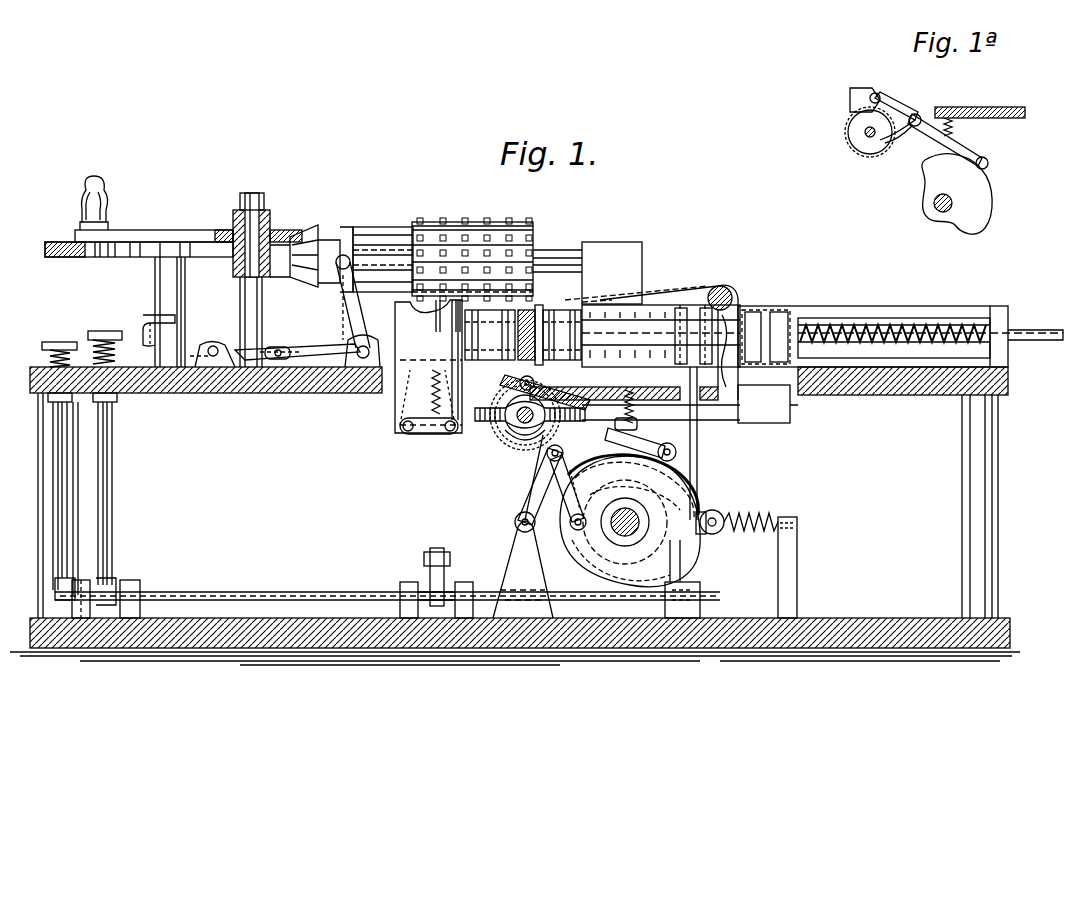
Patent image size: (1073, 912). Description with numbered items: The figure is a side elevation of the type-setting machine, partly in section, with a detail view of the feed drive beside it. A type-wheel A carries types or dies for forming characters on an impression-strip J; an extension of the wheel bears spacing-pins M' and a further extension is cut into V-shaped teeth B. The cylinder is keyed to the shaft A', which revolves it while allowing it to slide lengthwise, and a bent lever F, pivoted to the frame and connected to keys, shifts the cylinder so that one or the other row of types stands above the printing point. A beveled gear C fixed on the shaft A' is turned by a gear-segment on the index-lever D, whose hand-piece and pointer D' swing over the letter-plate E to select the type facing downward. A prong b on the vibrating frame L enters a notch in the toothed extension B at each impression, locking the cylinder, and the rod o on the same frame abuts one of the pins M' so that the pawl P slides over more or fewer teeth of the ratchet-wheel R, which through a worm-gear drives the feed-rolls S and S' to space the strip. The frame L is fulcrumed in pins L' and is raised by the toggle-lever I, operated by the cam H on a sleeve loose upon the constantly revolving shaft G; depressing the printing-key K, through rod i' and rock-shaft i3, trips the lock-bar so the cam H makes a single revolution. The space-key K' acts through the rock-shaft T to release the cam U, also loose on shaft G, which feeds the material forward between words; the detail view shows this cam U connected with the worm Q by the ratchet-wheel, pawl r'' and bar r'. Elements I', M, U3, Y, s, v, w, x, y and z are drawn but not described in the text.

In FIG. 1, the type-wheel A is at (472, 247).
In FIG. 1, the shaft A' is at (587, 258).
In FIG. 1, the cylinder extension with V-shaped teeth B is at (362, 222).
In FIG. 1, the beveled gear C is at (296, 236).
In FIG. 1, the index-lever D is at (188, 223).
In FIG. 1, the hand-piece and pointer D' is at (105, 201).
In FIG. 1, the letter-plate E is at (62, 248).
In FIG. 1, the bent lever F is at (275, 355).
In FIG. 1, the shaft G is at (612, 530).
In FIG. 1A, the shaft G is at (935, 205).
In FIG. 1, the cam H is at (630, 516).
In FIG. 1, the toggle-lever I is at (537, 480).
In FIG. 1, the link I' is at (568, 492).
In FIG. 1, the impression-strip J is at (530, 308).
In FIG. 1, the printing-key K is at (105, 446).
In FIG. 1, the space-key K' is at (59, 459).
In FIG. 1, the vibrating frame L is at (651, 283).
In FIG. 1, the pins L' is at (737, 327).
In FIG. 1, the bar M is at (485, 246).
In FIG. 1, the spacing-pins M' is at (472, 210).
In FIG. 1, the pawl P is at (523, 425).
In FIG. 1, the worm Q is at (520, 420).
In FIG. 1, the ratchet-wheel R is at (521, 430).
In FIG. 1A, the ratchet-wheel R is at (870, 122).
In FIG. 1, the feed-rolls S is at (504, 335).
In FIG. 1, the feed-roller S' is at (562, 335).
In FIG. 1, the rock-shaft T is at (225, 598).
In FIG. 1, the cam U is at (700, 502).
In FIG. 1A, the cam U is at (957, 194).
In FIG. 1, the triangular link U3 is at (482, 592).
In FIG. 1, the flange Y is at (750, 310).
In FIG. 1, the prong b is at (398, 306).
In FIG. 1, the projection i' is at (694, 579).
In FIG. 1, the rock-shaft i3 is at (120, 582).
In FIG. 1, the rod o is at (444, 312).
In FIG. 1, the bar r' is at (640, 425).
In FIG. 1A, the bar r' is at (966, 138).
In FIG. 1A, the pawl r'' is at (899, 121).
In FIG. 1, the screw s is at (925, 320).
In FIG. 1, the spring v is at (751, 513).
In FIG. 1, the rod w is at (700, 458).
In FIG. 1, the cylinder x is at (661, 336).
In FIG. 1, the post y is at (783, 515).
In FIG. 1, the housing z is at (820, 318).